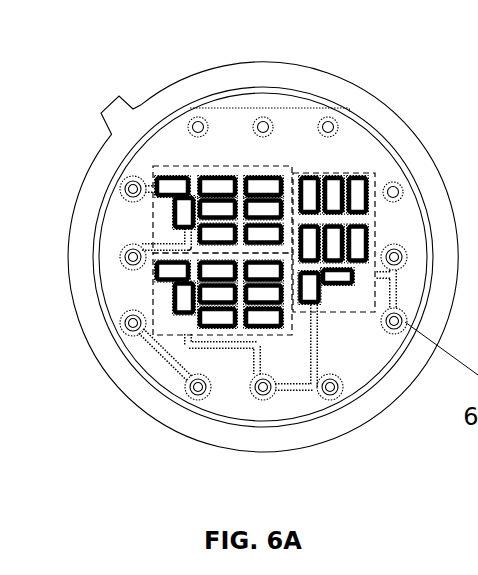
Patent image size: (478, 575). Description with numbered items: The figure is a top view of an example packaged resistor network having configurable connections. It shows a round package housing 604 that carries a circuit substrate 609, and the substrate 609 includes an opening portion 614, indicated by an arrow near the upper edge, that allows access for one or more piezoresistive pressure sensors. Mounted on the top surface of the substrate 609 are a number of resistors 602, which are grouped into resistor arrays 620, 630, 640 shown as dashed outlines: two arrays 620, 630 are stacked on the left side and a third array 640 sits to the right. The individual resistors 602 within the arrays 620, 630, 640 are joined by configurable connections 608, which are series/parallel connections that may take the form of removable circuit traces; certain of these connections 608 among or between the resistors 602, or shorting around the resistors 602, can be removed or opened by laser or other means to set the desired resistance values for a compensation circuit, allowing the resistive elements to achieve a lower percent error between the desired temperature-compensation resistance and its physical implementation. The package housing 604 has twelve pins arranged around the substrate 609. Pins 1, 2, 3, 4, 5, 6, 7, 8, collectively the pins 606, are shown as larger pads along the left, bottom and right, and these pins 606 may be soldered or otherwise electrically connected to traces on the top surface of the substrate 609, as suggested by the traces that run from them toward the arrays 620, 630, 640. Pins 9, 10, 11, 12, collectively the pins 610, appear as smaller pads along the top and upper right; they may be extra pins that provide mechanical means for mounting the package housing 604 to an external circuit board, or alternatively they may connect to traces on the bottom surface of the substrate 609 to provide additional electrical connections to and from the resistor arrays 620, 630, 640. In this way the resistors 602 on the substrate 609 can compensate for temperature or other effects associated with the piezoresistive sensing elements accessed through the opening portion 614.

The package housing 604 is at (477, 72).
The circuit substrate 609 is at (233, 120).
The opening portion 614 is at (290, 88).
The pins 9-12 610 is at (395, 105).
The resistor array 620 is at (163, 178).
The resistors 602 is at (193, 228).
The configurable connections 608 is at (163, 241).
The pins 1-8 606 is at (336, 385).
The resistor array 630 is at (172, 332).
The resistor array 640 is at (363, 313).
The pin 1 is at (120, 190).
The pin 2 is at (120, 257).
The pin 3 is at (121, 327).
The pin 4 is at (197, 400).
The pin 5 is at (255, 396).
The pin 6 is at (338, 399).
The pin 7 is at (404, 330).
The pin 8 is at (407, 256).
The pin 9 is at (403, 192).
The pin 10 is at (328, 117).
The pin 11 is at (266, 117).
The pin 12 is at (193, 118).